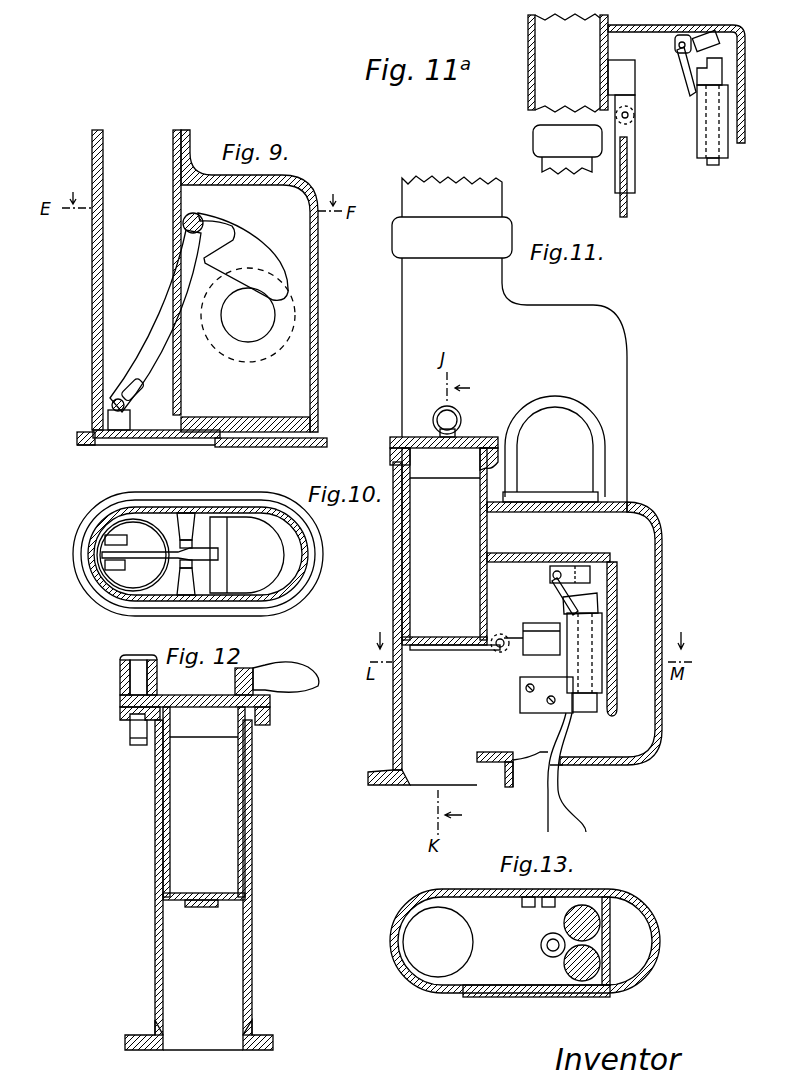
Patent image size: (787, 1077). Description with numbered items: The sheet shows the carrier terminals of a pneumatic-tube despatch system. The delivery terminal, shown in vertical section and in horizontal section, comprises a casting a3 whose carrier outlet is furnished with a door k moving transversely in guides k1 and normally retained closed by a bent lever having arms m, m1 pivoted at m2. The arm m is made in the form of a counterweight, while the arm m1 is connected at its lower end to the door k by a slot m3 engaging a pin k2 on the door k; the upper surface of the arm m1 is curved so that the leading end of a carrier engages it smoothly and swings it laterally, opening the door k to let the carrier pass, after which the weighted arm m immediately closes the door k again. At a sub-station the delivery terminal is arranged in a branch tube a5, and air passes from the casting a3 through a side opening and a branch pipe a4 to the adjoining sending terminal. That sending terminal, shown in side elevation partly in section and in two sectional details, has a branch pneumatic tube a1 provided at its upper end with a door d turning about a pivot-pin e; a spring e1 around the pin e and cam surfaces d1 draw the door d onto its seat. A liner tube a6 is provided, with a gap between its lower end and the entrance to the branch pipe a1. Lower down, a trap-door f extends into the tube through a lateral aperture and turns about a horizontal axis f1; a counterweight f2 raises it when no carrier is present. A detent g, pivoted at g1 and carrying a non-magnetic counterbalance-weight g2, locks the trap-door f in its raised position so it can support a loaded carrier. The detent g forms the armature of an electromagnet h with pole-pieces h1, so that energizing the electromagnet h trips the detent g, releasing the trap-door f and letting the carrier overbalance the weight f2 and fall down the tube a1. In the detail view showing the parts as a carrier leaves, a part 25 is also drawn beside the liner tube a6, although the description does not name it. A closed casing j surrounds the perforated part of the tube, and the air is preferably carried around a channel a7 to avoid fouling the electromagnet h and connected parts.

In FIG. 11, the branch pneumatic tube a1 is at (440, 624).
In FIG. 12, the branch pneumatic tube a1 is at (199, 885).
In FIG. 13, the branch pneumatic tube a1 is at (438, 942).
In FIG. 9, the casting a3 is at (93, 332).
In FIG. 10, the casting a3 is at (96, 543).
In FIG. 11, the casting a3 is at (514, 380).
In FIG. 9, the branch pipe a4 is at (248, 315).
In FIG. 11, the branch pipe a4 is at (554, 449).
In FIG. 11, the branch tube a5 is at (492, 202).
In FIG. 11, the liner tube a6 is at (403, 608).
In FIG. 12, the liner tube a6 is at (165, 830).
In FIG. 11, the channel a7 is at (574, 633).
In FIG. 13, the channel a7 is at (525, 943).
In FIG. 11, the door d is at (481, 442).
In FIG. 12, the door d is at (188, 698).
In FIG. 12, the cam surfaces d1 is at (262, 718).
In FIG. 12, the pivot-pin e is at (135, 690).
In FIG. 12, the spring e1 is at (125, 672).
In FIG. 11, the trap-door f is at (418, 650).
In FIG. 11A, the trap-door f is at (632, 202).
In FIG. 12, the trap-door f is at (180, 903).
In FIG. 11, the horizontal axis f1 is at (499, 652).
In FIG. 11A, the horizontal axis f1 is at (634, 115).
In FIG. 11, the counterweight f2 is at (535, 628).
In FIG. 11A, the counterweight f2 is at (630, 78).
In FIG. 11, the detent g is at (570, 604).
In FIG. 11A, the detent g is at (692, 100).
In FIG. 11, the pivot g1 is at (553, 576).
In FIG. 11A, the pivot g1 is at (678, 46).
In FIG. 11A, the counterbalance-weight g2 is at (716, 34).
In FIG. 11, the electromagnet h is at (601, 658).
In FIG. 13, the electromagnet h is at (590, 906).
In FIG. 11, the pole-pieces h1 is at (570, 600).
In FIG. 11A, the pole-pieces h1 is at (702, 78).
In FIG. 11, the closed casing j is at (527, 766).
In FIG. 9, the door k is at (162, 438).
In FIG. 9, the guides k1 is at (290, 440).
In FIG. 9, the pin k2 is at (111, 406).
In FIG. 10, the pin k2 is at (108, 570).
In FIG. 9, the arm m is at (272, 258).
In FIG. 10, the arm m is at (193, 555).
In FIG. 9, the arm m1 is at (151, 350).
In FIG. 10, the arm m1 is at (212, 552).
In FIG. 9, the pivot m2 is at (200, 215).
In FIG. 10, the pivot m2 is at (204, 590).
In FIG. 9, the slot m3 is at (128, 388).
In FIG. 11A, the cap piece 25 is at (548, 165).